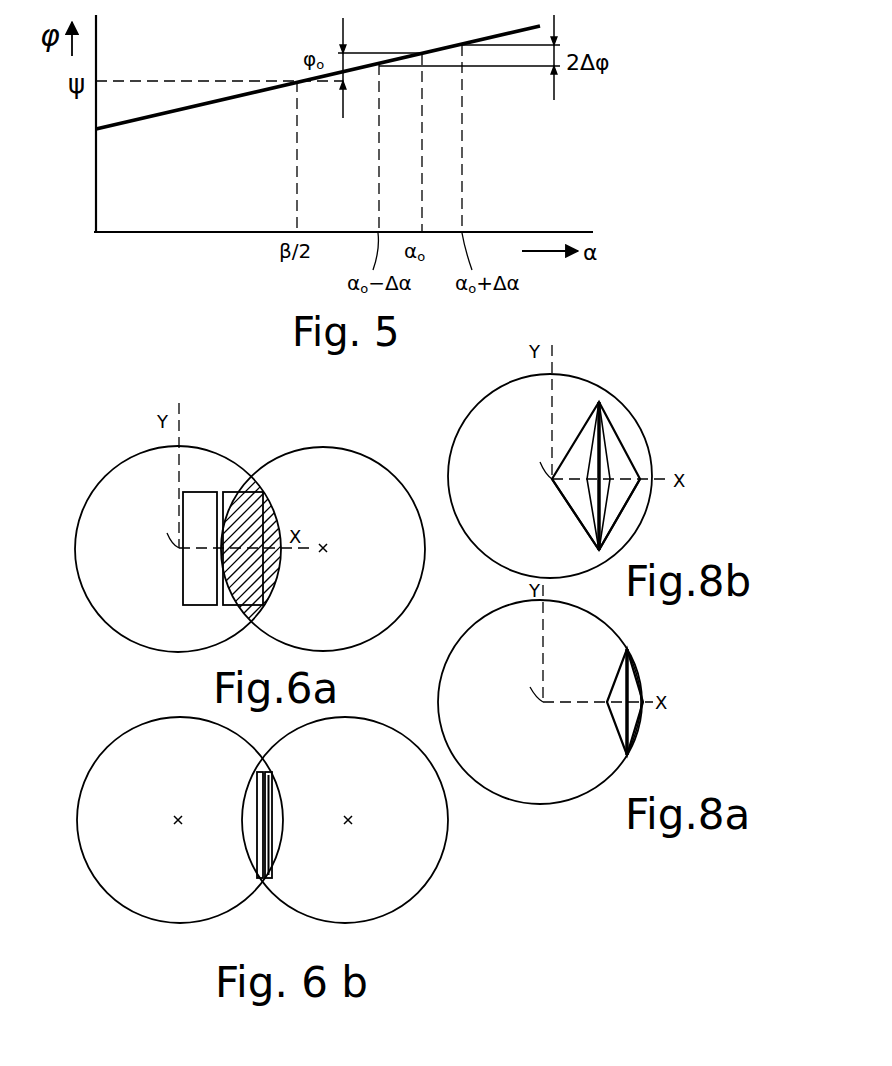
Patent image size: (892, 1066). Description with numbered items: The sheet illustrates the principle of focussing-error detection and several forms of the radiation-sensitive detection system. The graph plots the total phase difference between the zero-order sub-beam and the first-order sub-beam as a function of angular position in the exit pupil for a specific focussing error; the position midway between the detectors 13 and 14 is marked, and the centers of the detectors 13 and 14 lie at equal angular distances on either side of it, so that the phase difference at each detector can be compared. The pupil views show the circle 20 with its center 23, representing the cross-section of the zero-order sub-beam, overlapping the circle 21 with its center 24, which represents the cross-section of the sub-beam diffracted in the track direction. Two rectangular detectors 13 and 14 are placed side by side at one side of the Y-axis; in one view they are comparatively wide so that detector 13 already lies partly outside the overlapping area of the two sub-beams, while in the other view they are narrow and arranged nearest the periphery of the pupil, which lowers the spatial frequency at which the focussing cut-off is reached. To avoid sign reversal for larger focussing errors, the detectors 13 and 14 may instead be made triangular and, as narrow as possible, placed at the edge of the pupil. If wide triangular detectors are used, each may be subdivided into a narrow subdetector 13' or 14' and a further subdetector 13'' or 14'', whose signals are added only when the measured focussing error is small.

In FIG. 6A, the detector 13 is at (195, 568).
In FIG. 6B, the detector 13 is at (240, 826).
In FIG. 8A, the detector 13 is at (611, 702).
In FIG. 6A, the detector 14 is at (260, 561).
In FIG. 6B, the detector 14 is at (291, 826).
In FIG. 8A, the detector 14 is at (651, 703).
In FIG. 8B, the narrow subdetector 13' is at (571, 514).
In FIG. 8B, the subdetector 13'' is at (596, 472).
In FIG. 8B, the narrow subdetector 14' is at (639, 514).
In FIG. 8B, the subdetector 14'' is at (633, 476).
In FIG. 6A, the circle 20 is at (137, 645).
In FIG. 6B, the circle 20 is at (138, 915).
In FIG. 8B, the circle 20 is at (501, 570).
In FIG. 8A, the circle 20 is at (531, 805).
In FIG. 6A, the circle 21 is at (291, 648).
In FIG. 6B, the circle 21 is at (330, 920).
In FIG. 6A, the center 23 is at (163, 550).
In FIG. 6B, the center 23 is at (178, 825).
In FIG. 8B, the center 23 is at (537, 479).
In FIG. 8A, the center 23 is at (527, 702).
In FIG. 6A, the center 24 is at (323, 547).
In FIG. 6B, the center 24 is at (348, 825).